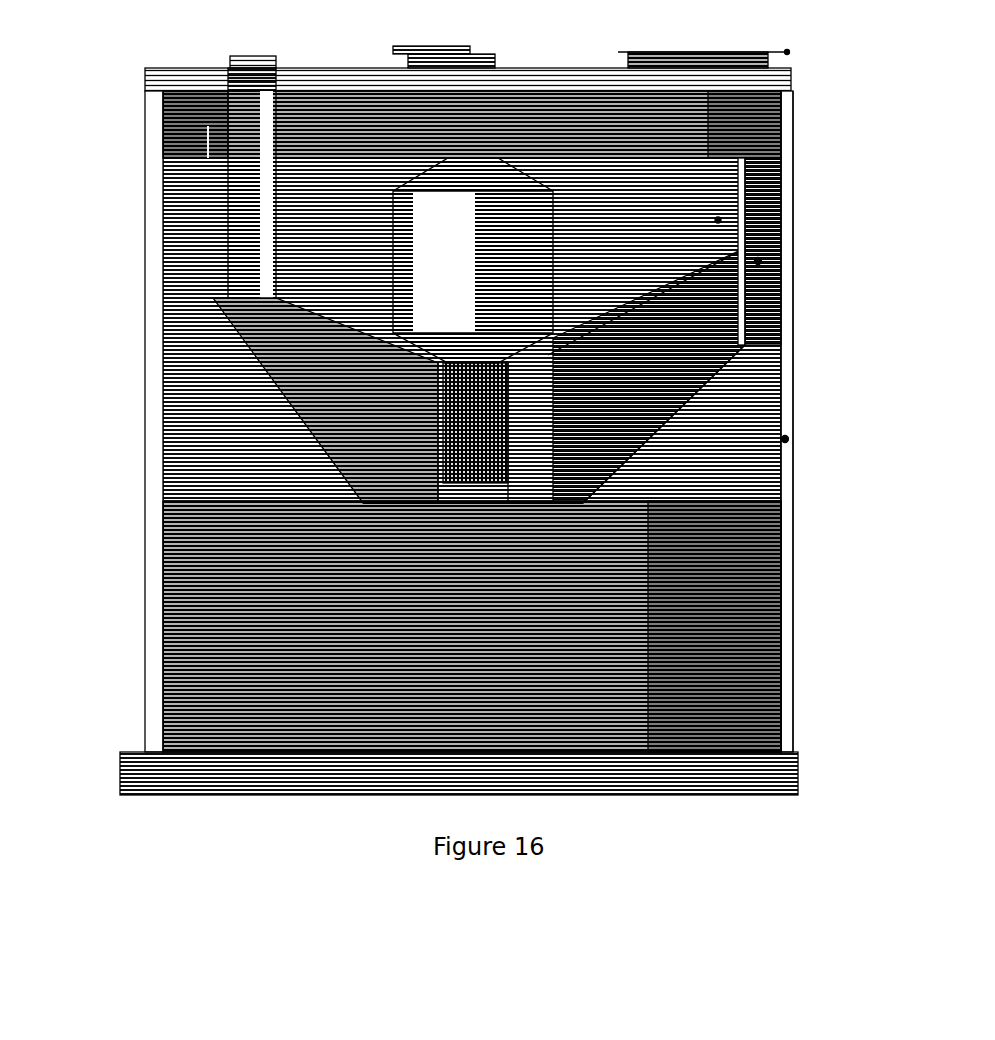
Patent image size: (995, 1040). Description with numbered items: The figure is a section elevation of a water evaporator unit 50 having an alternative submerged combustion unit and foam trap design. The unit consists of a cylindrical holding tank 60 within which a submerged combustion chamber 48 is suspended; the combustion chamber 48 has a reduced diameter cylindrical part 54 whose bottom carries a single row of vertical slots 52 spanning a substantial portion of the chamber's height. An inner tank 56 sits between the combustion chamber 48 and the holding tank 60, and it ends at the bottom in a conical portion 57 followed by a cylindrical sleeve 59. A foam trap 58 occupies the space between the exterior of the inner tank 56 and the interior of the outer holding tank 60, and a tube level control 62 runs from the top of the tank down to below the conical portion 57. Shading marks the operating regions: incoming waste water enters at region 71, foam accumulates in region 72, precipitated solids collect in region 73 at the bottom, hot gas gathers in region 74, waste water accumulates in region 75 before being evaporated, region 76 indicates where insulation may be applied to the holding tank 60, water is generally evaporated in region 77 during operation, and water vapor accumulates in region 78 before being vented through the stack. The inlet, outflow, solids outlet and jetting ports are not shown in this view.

The water evaporator unit 50 is at (193, 868).
The submerged combustion chamber 48 is at (385, 238).
The vertical slots 52 is at (445, 416).
The reduced diameter cylindrical part 54 is at (400, 382).
The inner tank 56 is at (205, 266).
The conical portion 57 is at (420, 362).
The foam trap 58 is at (205, 342).
The cylindrical sleeve 59 is at (440, 457).
The holding tank 60 is at (178, 662).
The tube level control 62 is at (160, 140).
The region where incoming waste water enters 71 is at (773, 293).
The region where foam accumulates 72 is at (752, 253).
The region where precipitated solids accumulate 73 is at (770, 518).
The region where hot gas accumulates 74 is at (773, 175).
The region where waste water accumulates before being evaporated 75 is at (700, 386).
The region where insulation may be applied 76 is at (780, 431).
The region where water is generally evaporated 77 is at (712, 212).
The region where water vapor accumulates 78 is at (775, 118).